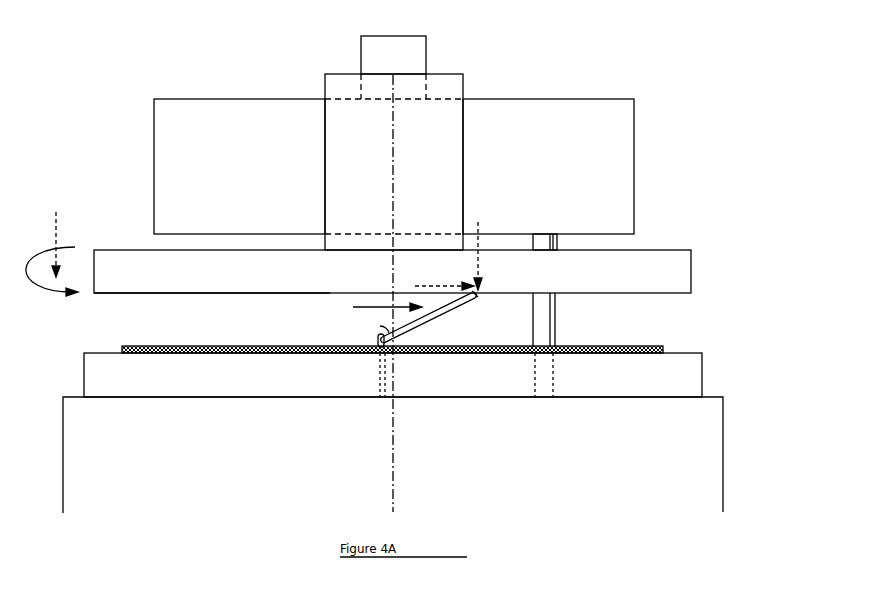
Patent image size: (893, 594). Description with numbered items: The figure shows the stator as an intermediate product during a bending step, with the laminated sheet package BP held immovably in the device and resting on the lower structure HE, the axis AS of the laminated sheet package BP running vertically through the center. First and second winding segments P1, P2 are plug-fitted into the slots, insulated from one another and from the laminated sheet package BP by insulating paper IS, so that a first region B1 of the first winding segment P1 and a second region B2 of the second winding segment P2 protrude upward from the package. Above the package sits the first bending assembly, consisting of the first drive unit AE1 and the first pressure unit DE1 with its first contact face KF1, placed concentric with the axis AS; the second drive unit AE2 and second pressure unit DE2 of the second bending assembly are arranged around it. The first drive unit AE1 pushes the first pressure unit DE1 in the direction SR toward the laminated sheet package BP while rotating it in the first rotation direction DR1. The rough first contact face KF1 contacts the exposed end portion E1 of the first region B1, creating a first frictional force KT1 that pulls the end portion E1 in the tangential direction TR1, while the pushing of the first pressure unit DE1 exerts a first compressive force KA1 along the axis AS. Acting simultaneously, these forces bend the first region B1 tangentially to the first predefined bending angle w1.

The second drive unit AE2 is at (413, 58).
The first drive unit AE1 is at (455, 108).
The second pressure unit DE2 is at (617, 132).
The first pressure unit DE1 is at (665, 270).
The direction SR is at (47, 244).
The first rotation direction DR1 is at (51, 276).
The first contact face KF1 is at (133, 294).
The insulating paper IS is at (663, 348).
The laminated sheet package BP is at (678, 373).
The holding element HE is at (687, 445).
The axis AS is at (394, 466).
The first winding segment P1 is at (380, 382).
The second winding segment P2 is at (548, 377).
The second region B2 is at (545, 332).
The first region B1 is at (437, 320).
The exposed end portion E1 is at (474, 299).
The first compressive force KA1 is at (491, 256).
The first frictional force KT1 is at (444, 280).
The direction TR1 is at (387, 302).
The first predefined bending angle w1 is at (377, 328).